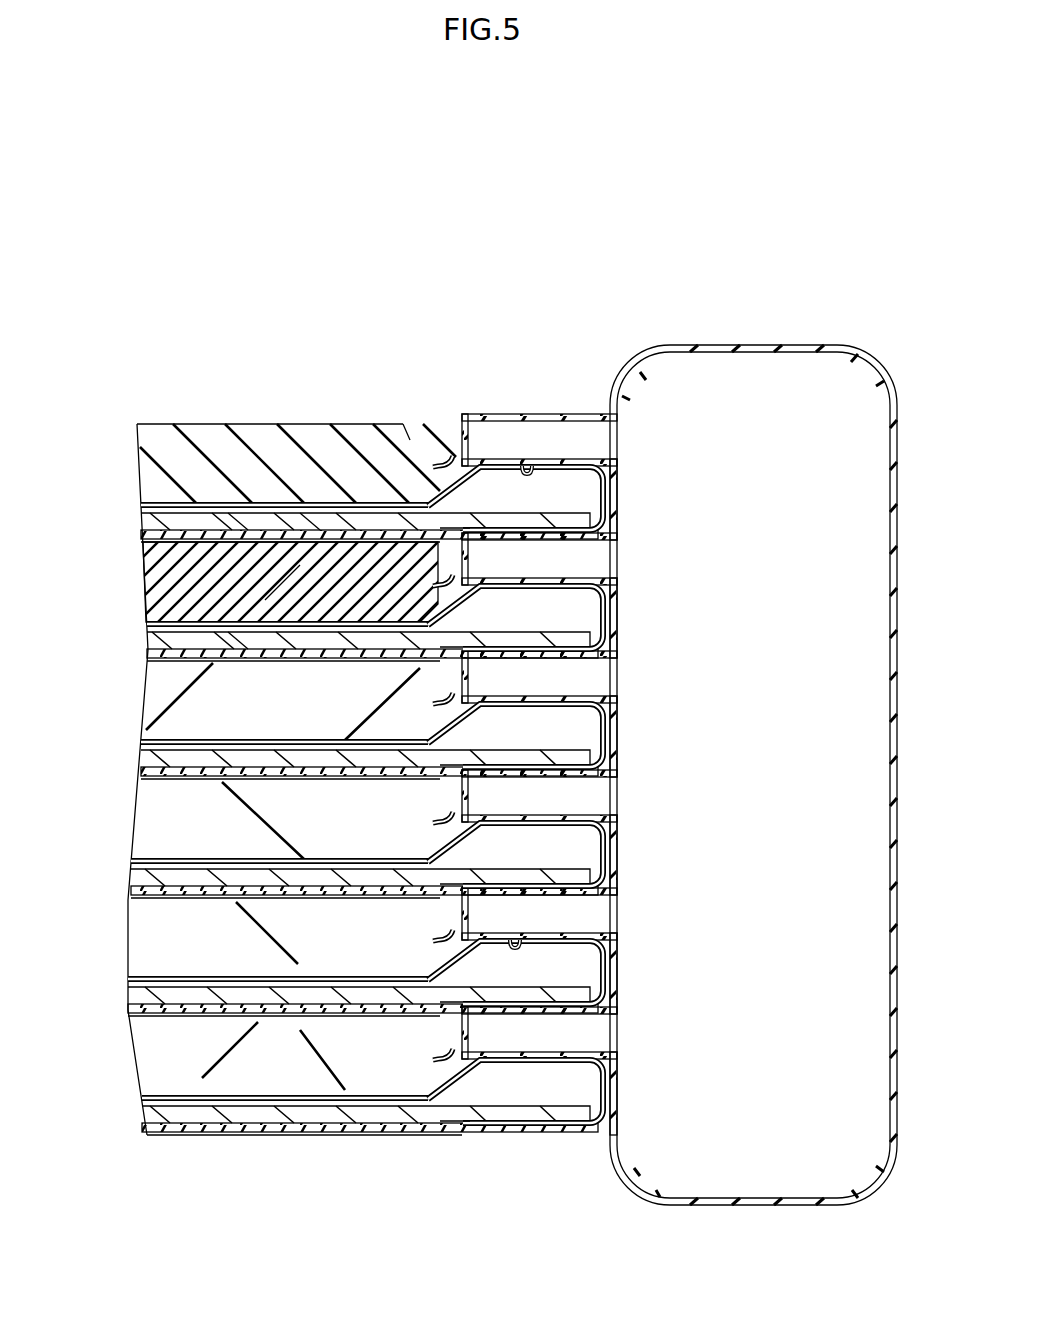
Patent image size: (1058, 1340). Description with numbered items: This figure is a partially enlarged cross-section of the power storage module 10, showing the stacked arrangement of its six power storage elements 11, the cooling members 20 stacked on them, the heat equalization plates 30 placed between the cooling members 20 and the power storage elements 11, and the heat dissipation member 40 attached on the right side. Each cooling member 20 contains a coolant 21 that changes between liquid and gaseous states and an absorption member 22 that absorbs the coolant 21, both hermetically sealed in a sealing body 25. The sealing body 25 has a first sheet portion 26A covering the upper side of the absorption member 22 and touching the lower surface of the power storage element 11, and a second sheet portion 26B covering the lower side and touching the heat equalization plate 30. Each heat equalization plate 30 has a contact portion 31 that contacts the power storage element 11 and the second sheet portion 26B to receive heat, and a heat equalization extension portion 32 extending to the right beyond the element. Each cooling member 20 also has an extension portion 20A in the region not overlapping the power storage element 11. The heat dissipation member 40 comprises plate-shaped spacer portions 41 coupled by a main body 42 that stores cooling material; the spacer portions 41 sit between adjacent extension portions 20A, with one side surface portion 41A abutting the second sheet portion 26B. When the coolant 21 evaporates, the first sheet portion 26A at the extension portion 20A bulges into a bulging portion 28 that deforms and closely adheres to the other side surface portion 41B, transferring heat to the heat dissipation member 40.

The power storage module 10 is at (188, 325).
The power storage element 11 is at (166, 440).
The cooling member 20 is at (125, 520).
The extension portion 20A is at (602, 468).
The coolant 21 is at (583, 730).
The absorption member 22 is at (338, 640).
The sealing body 25 is at (243, 515).
The first sheet portion 26A is at (162, 505).
The second sheet portion 26B is at (165, 534).
The bulging portion 28 is at (617, 703).
The heat equalization plate 30 is at (172, 553).
The contact portion 31 is at (292, 520).
The heat equalization extension portion 32 is at (408, 772).
The heat dissipation member 40 is at (858, 305).
The spacer portion 41 is at (453, 679).
The side surface portion 41A is at (504, 528).
The side surface portion 41B is at (527, 466).
The main body 42 is at (757, 347).